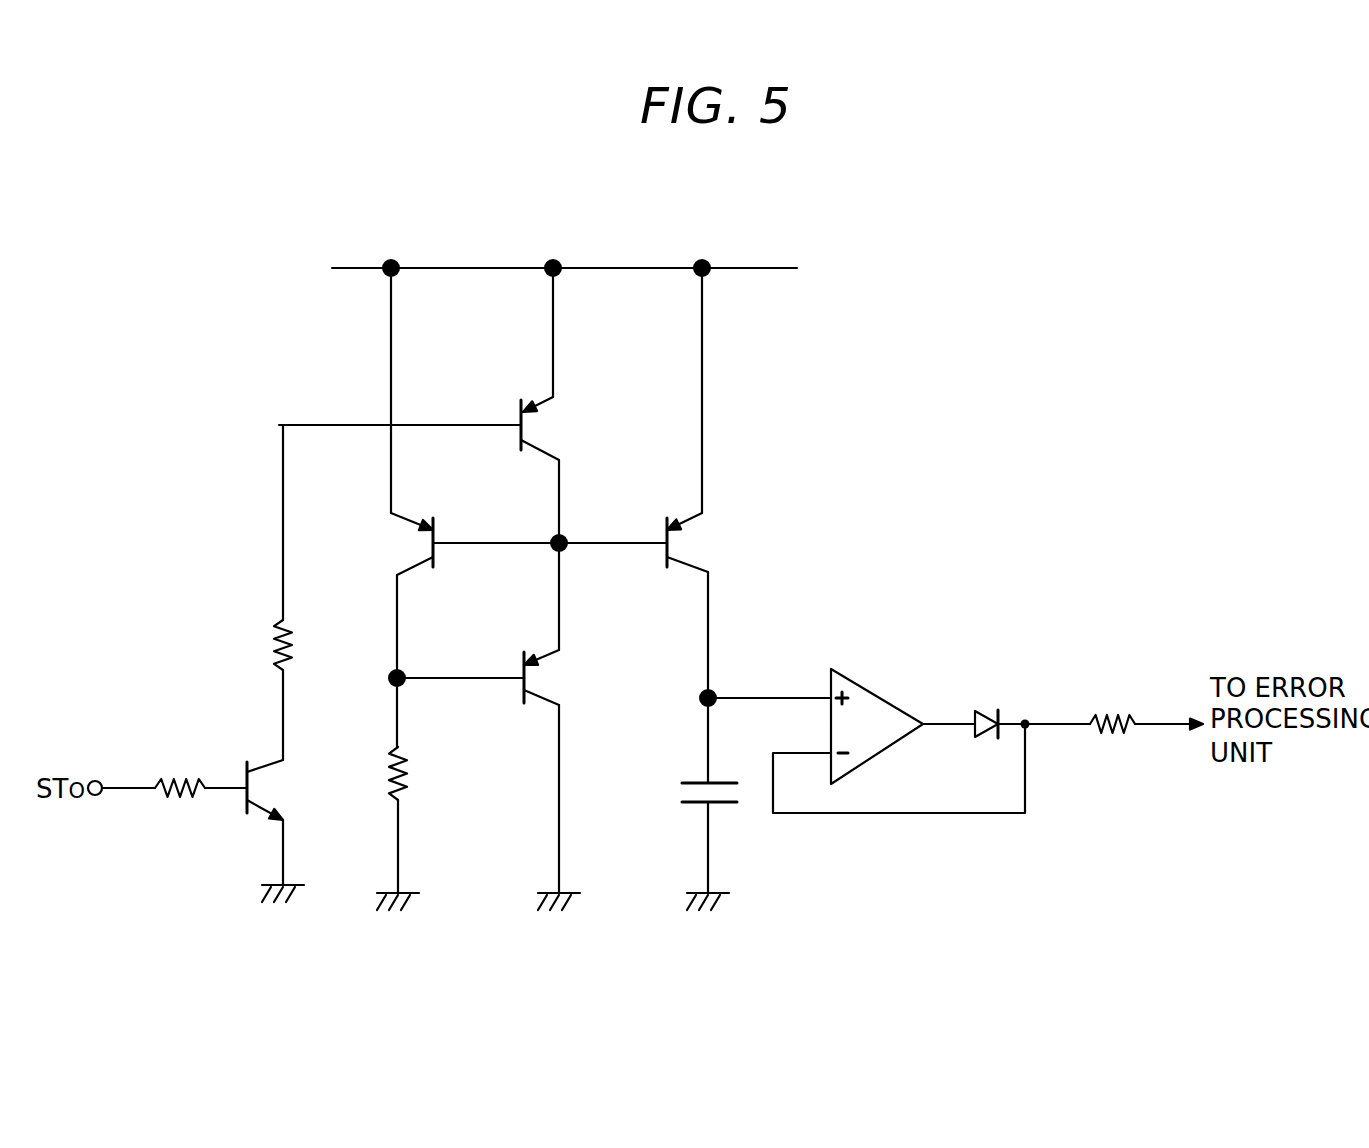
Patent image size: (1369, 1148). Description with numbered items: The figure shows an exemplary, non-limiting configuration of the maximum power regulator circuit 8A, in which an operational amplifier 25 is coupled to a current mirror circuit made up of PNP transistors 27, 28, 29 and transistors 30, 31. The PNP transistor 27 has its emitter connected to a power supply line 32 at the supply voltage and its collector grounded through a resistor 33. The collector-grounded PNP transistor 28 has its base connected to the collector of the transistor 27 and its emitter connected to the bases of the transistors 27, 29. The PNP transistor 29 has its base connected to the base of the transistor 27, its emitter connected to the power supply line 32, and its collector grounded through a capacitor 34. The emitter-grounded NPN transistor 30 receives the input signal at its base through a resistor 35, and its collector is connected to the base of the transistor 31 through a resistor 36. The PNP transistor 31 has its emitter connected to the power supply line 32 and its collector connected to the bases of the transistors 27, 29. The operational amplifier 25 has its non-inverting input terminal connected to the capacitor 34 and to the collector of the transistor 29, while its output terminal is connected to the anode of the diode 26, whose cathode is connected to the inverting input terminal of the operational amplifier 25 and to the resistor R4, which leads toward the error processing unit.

The maximum power regulator circuit 8A is at (958, 448).
The operational amplifier 25 is at (885, 697).
The diode 26 is at (980, 713).
The PNP transistor 27 is at (437, 565).
The collector-grounded PNP transistor 28 is at (522, 700).
The PNP transistor 29 is at (665, 563).
The emitter-grounded NPN transistor 30 is at (240, 805).
The PNP transistor 31 is at (519, 445).
The power supply line 32 is at (597, 268).
The resistor 33 is at (385, 775).
The capacitor 34 is at (690, 805).
The resistor 35 is at (187, 776).
The resistor 36 is at (272, 632).
The resistor R4 is at (1110, 715).